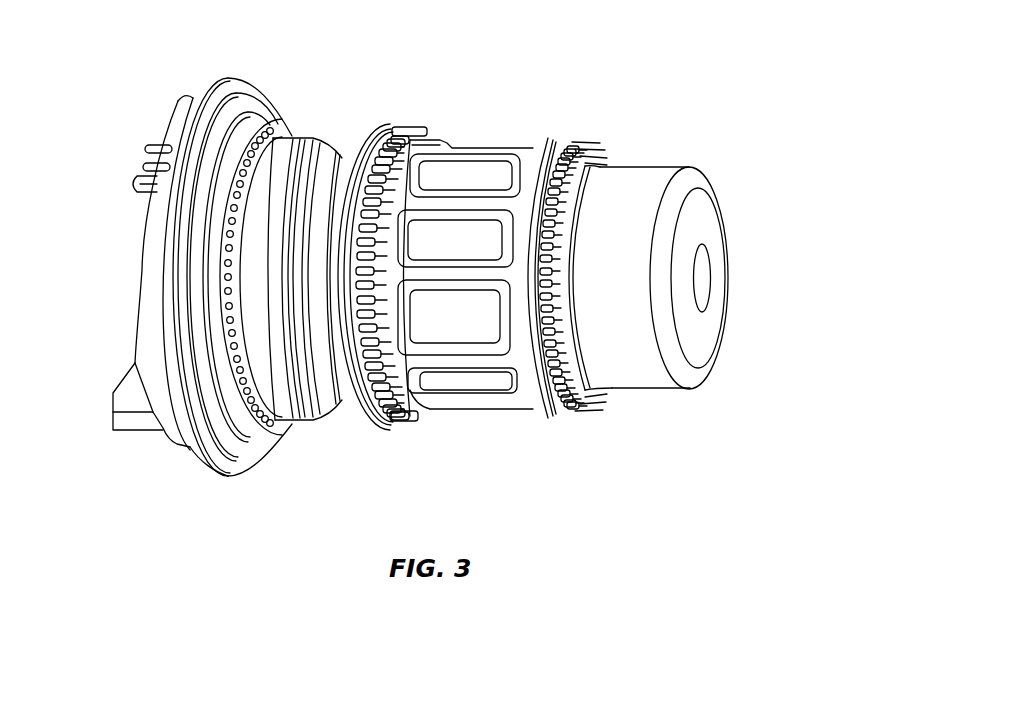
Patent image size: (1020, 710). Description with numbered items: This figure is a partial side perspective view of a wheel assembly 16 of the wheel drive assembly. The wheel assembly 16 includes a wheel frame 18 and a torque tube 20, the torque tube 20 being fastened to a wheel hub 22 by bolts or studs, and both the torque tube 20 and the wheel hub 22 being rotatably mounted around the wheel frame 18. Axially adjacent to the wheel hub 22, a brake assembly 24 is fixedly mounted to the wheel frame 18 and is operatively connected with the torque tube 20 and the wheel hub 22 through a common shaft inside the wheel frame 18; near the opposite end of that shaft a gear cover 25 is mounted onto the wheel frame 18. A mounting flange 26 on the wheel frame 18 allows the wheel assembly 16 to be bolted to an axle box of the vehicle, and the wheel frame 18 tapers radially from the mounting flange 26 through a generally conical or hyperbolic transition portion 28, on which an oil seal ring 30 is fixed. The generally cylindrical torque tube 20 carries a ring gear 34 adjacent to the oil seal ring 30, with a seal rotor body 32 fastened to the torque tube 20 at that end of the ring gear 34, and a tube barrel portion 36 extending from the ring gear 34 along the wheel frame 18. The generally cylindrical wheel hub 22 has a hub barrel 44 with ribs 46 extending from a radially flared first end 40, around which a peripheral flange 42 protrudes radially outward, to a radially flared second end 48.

The wheel assembly 16 is at (638, 116).
The wheel frame 18 is at (207, 97).
The torque tube 20 is at (298, 138).
The wheel hub 22 is at (473, 143).
The brake assembly 24 is at (712, 264).
The gear cover 25 is at (137, 320).
The mounting flange 26 is at (207, 460).
The transition portion 28 is at (238, 120).
The oil seal ring 30 is at (232, 440).
The seal rotor body 32 is at (255, 430).
The ring gear 34 is at (285, 413).
The tube barrel portion 36 is at (333, 383).
The first end 40 is at (418, 413).
The peripheral flange 42 is at (373, 428).
The hub barrel 44 is at (457, 382).
The ribs 46 is at (485, 350).
The second end 48 is at (152, 235).